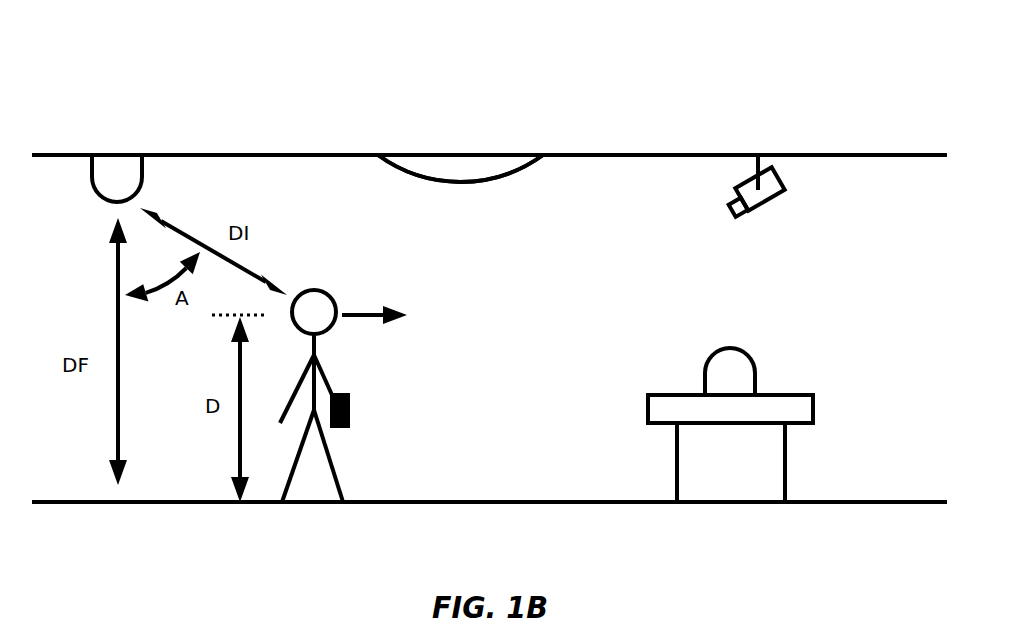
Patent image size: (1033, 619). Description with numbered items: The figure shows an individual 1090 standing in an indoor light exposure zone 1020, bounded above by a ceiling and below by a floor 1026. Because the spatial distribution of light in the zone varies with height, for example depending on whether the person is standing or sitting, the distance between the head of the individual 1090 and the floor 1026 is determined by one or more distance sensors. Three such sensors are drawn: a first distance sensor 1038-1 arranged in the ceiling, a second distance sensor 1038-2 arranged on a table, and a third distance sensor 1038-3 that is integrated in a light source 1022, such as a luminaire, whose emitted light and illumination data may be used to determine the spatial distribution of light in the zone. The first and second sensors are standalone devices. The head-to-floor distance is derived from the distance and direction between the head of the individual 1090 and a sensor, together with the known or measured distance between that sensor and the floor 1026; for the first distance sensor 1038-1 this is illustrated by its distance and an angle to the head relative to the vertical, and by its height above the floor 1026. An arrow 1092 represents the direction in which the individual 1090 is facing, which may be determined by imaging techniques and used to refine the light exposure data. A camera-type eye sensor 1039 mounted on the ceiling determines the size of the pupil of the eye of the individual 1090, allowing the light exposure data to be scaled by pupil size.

The indoor light exposure zone 1020 is at (237, 111).
The floor 1026 is at (440, 500).
The first distance sensor 1038-1 is at (123, 177).
The third distance sensor 1038-3 is at (462, 165).
The light source 1022 is at (505, 163).
The eye sensor 1039 is at (748, 188).
The second distance sensor 1038-2 is at (730, 380).
The individual 1090 is at (327, 375).
The direction in which the individual is facing 1092 is at (405, 313).